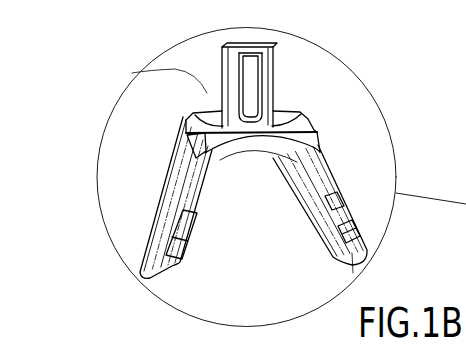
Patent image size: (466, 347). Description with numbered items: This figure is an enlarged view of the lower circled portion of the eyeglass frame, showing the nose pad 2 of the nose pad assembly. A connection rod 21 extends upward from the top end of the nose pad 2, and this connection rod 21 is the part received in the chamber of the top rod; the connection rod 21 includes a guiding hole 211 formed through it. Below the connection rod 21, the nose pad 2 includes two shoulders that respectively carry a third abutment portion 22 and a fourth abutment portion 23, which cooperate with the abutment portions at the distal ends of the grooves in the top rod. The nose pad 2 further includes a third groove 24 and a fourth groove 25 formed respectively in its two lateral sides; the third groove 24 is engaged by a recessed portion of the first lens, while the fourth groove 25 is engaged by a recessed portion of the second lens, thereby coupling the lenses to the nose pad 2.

The nose pad 2 is at (333, 97).
The connection rod 21 is at (132, 73).
The guiding hole 211 is at (256, 80).
The third abutment portion 22 is at (184, 120).
The fourth abutment portion 23 is at (314, 112).
The third groove 24 is at (168, 241).
The fourth groove 25 is at (366, 262).